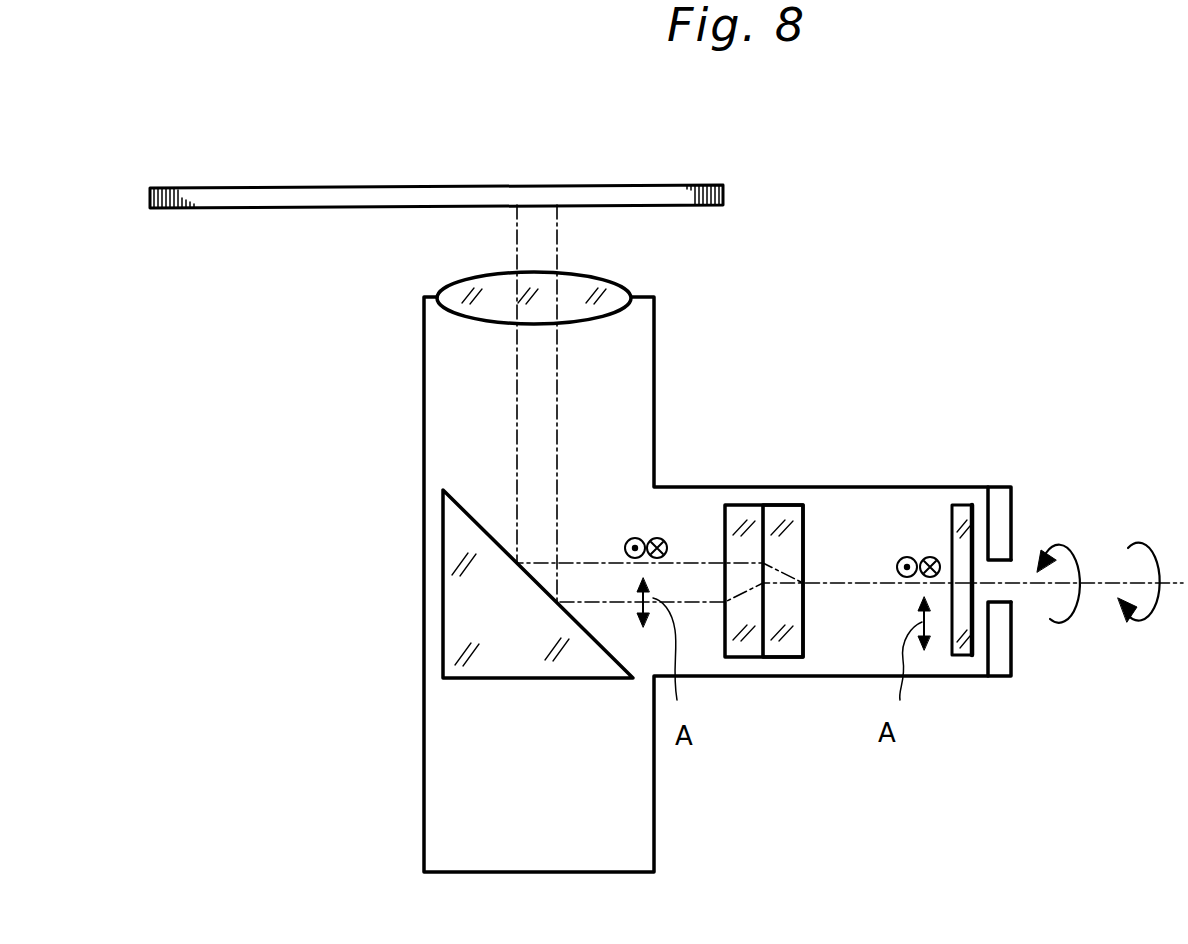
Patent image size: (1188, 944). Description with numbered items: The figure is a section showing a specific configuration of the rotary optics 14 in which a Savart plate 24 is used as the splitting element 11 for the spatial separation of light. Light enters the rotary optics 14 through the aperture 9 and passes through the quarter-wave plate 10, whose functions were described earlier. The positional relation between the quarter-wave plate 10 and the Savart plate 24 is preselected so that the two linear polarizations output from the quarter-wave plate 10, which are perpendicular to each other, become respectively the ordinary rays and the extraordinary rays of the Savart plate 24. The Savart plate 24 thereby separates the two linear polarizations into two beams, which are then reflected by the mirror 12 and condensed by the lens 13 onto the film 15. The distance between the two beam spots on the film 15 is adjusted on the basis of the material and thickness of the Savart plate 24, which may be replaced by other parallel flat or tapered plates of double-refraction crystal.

The aperture 9 is at (995, 503).
The quarter-wave plate 10 is at (960, 657).
The splitting element 11 is at (808, 510).
The mirror 12 is at (487, 638).
The lens 13 is at (583, 288).
The rotary optics 14 is at (653, 358).
The film 15 is at (270, 198).
The Savart plate 24 is at (781, 640).